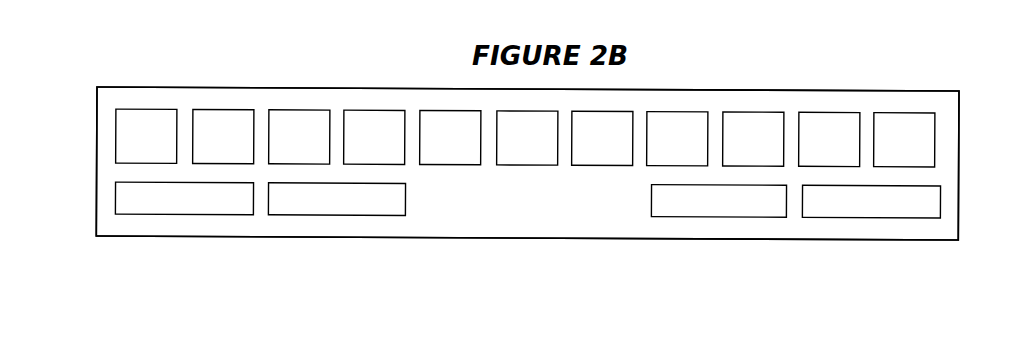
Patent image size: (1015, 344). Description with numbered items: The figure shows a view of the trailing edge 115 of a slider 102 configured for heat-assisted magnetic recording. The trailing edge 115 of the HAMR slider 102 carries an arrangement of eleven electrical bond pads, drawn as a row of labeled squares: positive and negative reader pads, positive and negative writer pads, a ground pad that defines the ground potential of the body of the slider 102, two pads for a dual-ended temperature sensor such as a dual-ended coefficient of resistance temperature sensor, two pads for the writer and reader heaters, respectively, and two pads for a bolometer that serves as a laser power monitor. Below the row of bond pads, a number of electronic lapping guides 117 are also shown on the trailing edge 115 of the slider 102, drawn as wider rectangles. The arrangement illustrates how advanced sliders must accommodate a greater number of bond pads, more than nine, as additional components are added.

The slider 102 is at (528, 154).
The trailing edge 115 is at (123, 87).
The electronic lapping guides 117 is at (327, 203).